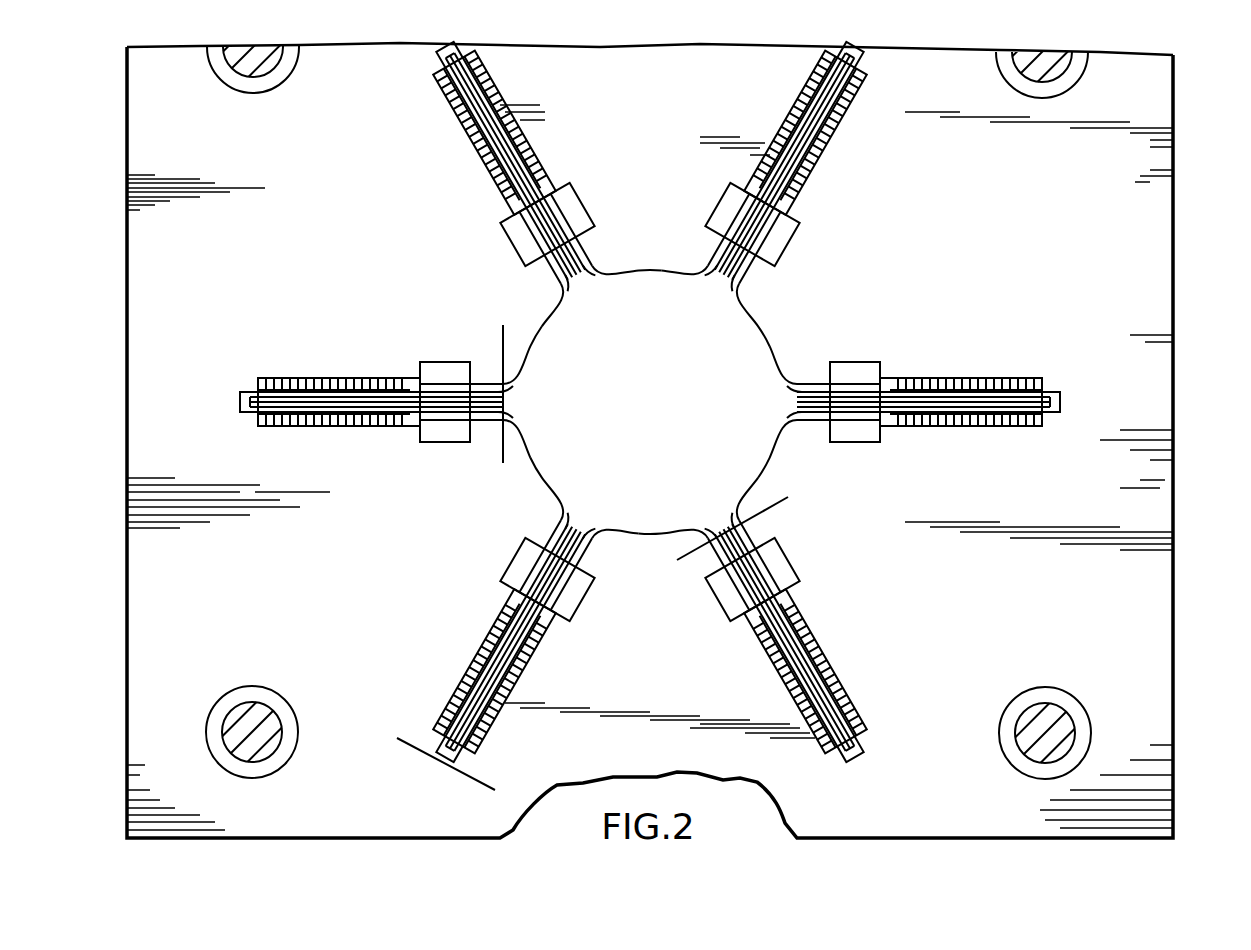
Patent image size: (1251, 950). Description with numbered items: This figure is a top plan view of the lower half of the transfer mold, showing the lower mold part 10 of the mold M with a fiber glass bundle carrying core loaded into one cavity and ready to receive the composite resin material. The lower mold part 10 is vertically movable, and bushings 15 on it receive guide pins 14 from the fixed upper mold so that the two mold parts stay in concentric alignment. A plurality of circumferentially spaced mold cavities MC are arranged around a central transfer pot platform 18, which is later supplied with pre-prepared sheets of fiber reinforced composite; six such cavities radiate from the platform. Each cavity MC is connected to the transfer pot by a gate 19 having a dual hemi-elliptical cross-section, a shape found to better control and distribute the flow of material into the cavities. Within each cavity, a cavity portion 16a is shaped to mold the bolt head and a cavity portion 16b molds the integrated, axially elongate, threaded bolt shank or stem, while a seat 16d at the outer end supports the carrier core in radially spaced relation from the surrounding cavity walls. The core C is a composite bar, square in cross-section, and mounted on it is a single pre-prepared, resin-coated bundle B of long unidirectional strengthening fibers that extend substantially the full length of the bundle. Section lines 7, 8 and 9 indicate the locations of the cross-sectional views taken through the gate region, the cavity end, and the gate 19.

The lower mold part 10 is at (620, 110).
The guide pins 14 is at (247, 68).
The bushings 15 is at (283, 78).
The transfer pot platform 18 is at (662, 298).
The gate 19 is at (742, 287).
The bolt head cavity portion 16a is at (792, 240).
The bolt shank cavity portion 16b is at (828, 158).
The core seat 16d is at (742, 292).
The mold cavities MC is at (650, 402).
The fiber bundle B is at (970, 402).
The core C is at (887, 397).
The mold M is at (1178, 346).
The section line 7- 7 is at (525, 332).
The section line 8- 8 is at (422, 715).
The section line 9- 9 is at (788, 497).